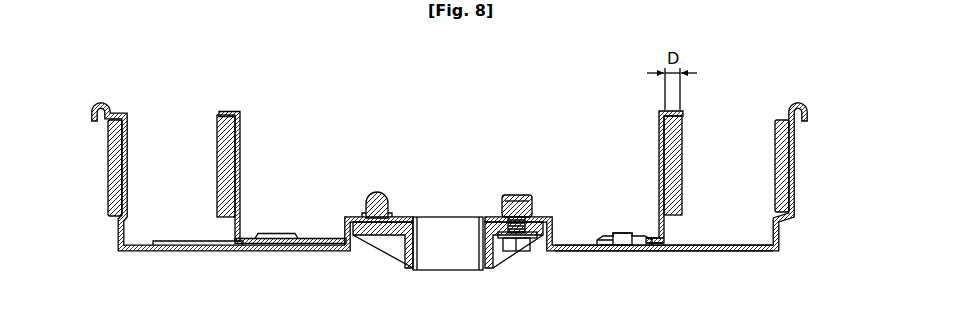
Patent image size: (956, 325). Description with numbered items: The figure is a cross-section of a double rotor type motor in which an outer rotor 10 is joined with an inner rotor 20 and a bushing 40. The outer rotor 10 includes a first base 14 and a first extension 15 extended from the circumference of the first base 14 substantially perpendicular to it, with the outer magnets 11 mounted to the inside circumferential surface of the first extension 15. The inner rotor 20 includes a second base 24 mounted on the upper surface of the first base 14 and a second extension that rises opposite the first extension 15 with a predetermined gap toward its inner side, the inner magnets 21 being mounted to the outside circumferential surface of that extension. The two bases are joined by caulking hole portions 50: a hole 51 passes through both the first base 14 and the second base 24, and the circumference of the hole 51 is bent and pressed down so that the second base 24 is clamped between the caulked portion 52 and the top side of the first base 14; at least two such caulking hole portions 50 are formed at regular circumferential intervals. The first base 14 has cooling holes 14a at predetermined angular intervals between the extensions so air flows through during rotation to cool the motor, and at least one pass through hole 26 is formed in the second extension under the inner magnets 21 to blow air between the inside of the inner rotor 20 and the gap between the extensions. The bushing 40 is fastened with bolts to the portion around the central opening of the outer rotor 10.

The outer rotor 10 is at (704, 255).
The outer magnets 11 is at (113, 162).
The first base 14 is at (745, 252).
The cooling holes 14a is at (190, 251).
The first extension 15 is at (795, 168).
The inner rotor 20 is at (660, 153).
The inner magnets 21 is at (240, 190).
The second base 24 is at (649, 246).
The pass through hole 26 is at (241, 228).
The bushing 40 is at (382, 263).
The caulking hole portions 50 is at (622, 232).
The hole 51 is at (622, 246).
The caulked portion 52 is at (608, 236).